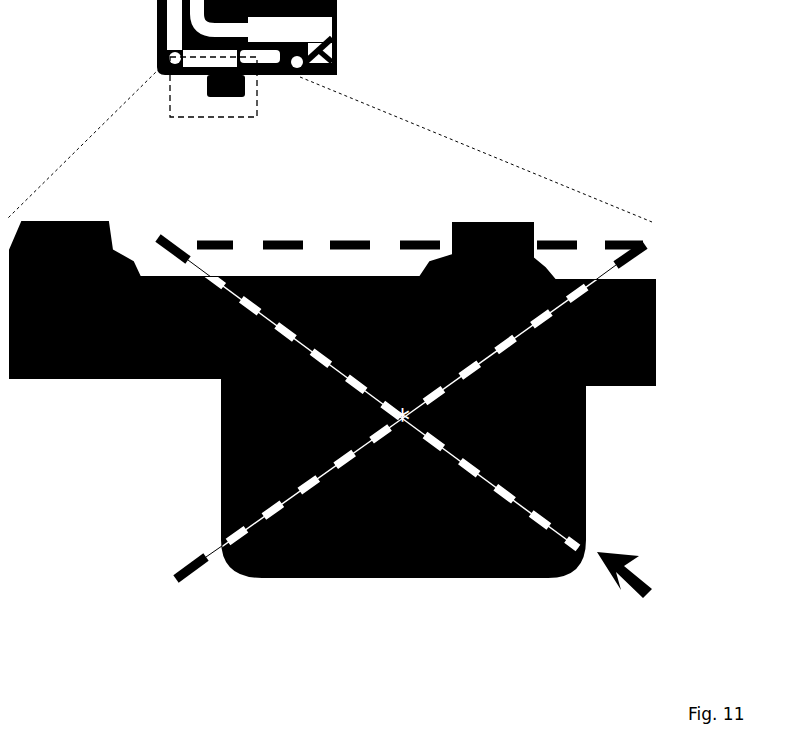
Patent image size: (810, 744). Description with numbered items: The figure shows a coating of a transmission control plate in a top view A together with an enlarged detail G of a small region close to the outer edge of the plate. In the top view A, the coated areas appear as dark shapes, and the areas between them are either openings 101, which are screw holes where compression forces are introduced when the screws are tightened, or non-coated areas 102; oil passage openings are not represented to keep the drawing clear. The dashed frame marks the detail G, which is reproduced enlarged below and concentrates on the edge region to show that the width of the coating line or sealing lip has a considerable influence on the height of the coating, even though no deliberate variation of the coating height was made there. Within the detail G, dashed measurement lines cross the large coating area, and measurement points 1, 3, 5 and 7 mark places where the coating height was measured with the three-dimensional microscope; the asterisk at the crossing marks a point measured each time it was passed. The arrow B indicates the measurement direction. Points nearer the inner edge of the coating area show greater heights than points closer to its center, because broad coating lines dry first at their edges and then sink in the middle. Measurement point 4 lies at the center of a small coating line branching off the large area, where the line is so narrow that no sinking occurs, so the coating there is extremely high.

The measurement point 1 is at (490, 483).
The measurement point 3 is at (280, 328).
The measurement point 4 is at (420, 249).
The measurement point 5 is at (524, 331).
The measurement point 7 is at (289, 499).
The opening 101 is at (282, 64).
The non-coated area 102 is at (258, 58).
The top view A is at (264, 48).
The arrow B is at (646, 570).
The detail G is at (243, 108).